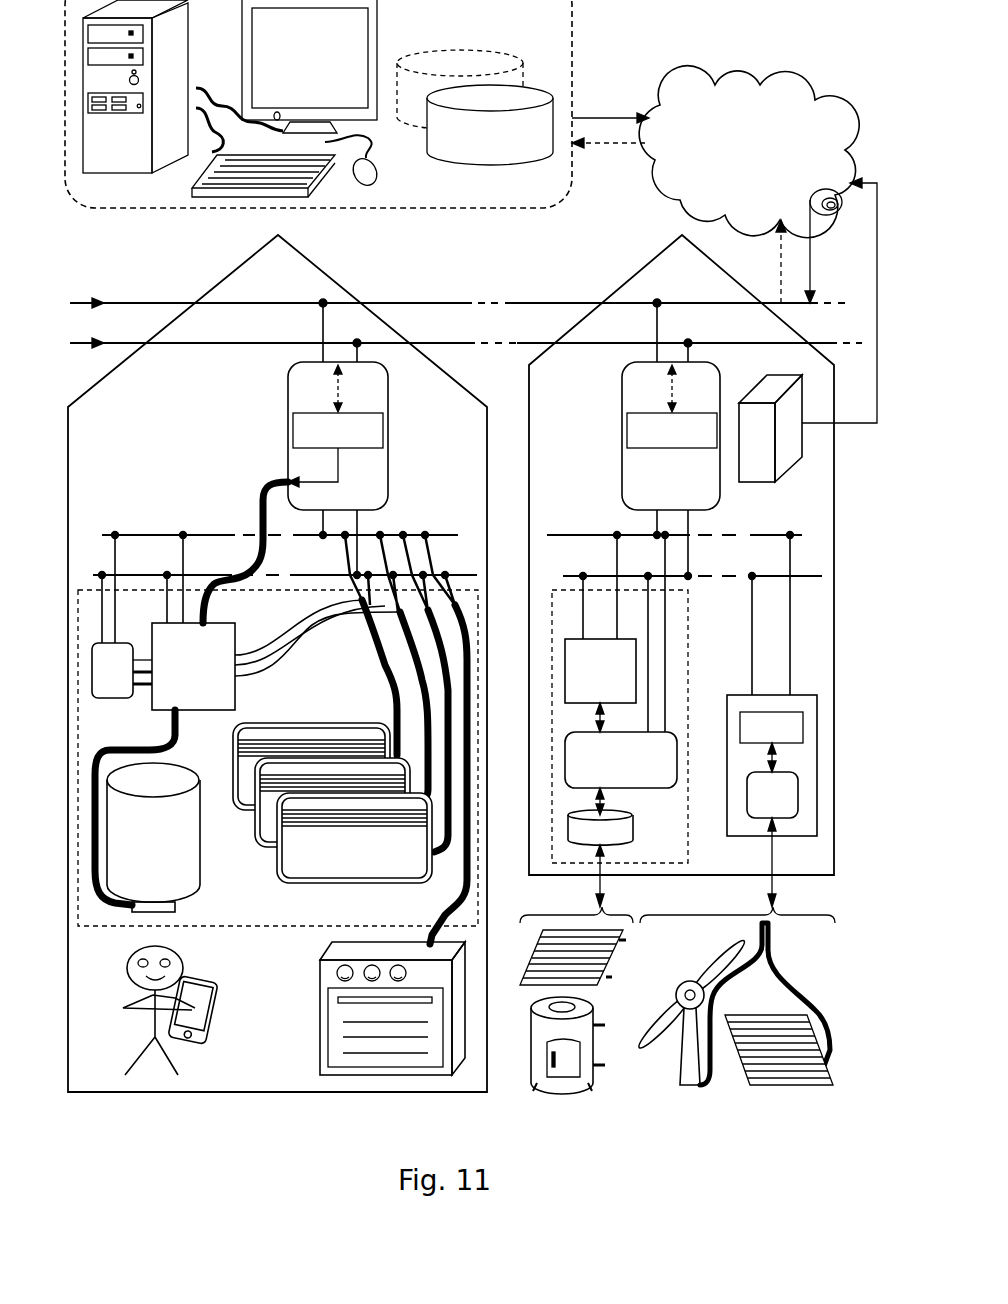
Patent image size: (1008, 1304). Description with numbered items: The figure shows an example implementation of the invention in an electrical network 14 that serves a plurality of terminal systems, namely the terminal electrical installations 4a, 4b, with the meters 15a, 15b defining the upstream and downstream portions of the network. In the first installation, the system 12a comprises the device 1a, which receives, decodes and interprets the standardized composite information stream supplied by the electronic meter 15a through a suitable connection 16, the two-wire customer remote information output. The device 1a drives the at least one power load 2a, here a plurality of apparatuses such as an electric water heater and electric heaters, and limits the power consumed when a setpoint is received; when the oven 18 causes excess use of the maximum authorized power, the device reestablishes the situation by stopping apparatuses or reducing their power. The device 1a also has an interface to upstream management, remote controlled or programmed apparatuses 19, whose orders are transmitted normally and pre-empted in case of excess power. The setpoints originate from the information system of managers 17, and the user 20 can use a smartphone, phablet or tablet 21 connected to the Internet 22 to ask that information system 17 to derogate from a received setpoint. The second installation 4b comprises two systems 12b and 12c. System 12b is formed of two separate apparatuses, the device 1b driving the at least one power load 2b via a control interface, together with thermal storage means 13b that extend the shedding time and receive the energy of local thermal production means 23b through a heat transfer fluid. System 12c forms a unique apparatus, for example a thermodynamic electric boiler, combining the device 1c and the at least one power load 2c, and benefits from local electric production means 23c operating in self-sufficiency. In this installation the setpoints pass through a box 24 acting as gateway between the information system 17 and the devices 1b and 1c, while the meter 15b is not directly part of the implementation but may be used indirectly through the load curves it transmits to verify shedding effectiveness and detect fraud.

The device 1a is at (162, 622).
The device 1b is at (600, 639).
The device 1c is at (777, 712).
The power load 2a is at (257, 865).
The power load 2b is at (677, 758).
The power load 2c is at (747, 795).
The terminal electrical installation 4a is at (290, 535).
The terminal installation 4b is at (593, 576).
The system 12a is at (76, 565).
The system 12b is at (690, 600).
The system 12c is at (727, 710).
The thermal storage means 13b is at (635, 827).
The electrical network 14 is at (72, 343).
The meter 15a is at (288, 395).
The meter 15b is at (622, 397).
The connection 16 is at (258, 500).
The information system of managers 17 is at (393, 208).
The oven 18 is at (320, 975).
The upstream management, remote controlled or programmed apparatuses 19 is at (110, 698).
The user 20 is at (148, 1016).
The smartphone, phablet or tablet 21 is at (210, 1031).
The Internet 22 is at (732, 75).
The local energy production means 23b is at (530, 918).
The local production means 23c is at (675, 918).
The box 24 is at (785, 437).